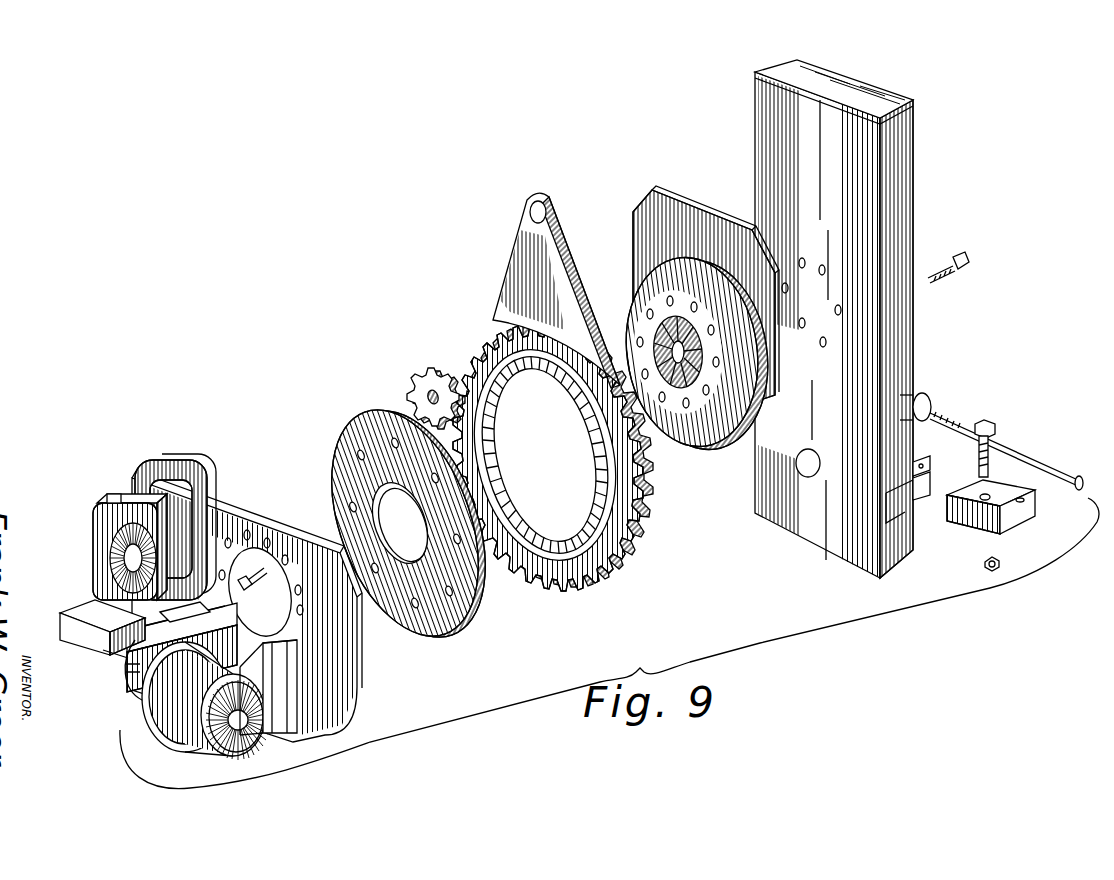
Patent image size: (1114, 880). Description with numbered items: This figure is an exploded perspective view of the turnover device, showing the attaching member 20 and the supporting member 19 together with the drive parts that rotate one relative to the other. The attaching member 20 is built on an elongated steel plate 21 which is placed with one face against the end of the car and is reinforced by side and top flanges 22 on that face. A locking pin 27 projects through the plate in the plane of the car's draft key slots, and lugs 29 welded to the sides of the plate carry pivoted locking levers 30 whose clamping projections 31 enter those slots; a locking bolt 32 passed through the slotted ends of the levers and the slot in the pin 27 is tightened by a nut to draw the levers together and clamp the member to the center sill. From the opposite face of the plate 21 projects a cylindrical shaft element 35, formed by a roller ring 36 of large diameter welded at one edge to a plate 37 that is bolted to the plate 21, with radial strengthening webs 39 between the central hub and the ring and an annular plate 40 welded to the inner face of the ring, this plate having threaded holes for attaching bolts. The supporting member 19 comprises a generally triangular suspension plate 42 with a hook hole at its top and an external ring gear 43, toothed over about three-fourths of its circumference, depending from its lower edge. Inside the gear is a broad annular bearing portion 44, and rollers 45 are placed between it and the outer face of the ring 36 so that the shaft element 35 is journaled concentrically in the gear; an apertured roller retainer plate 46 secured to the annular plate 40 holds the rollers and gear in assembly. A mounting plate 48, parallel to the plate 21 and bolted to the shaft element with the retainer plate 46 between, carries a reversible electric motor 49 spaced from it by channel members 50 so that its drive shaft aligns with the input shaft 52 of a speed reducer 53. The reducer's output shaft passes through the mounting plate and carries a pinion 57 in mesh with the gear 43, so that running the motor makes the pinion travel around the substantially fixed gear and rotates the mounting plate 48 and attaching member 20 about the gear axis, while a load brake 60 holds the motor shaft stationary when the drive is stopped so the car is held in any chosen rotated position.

The supporting member 19 is at (545, 290).
The attaching member 20 is at (834, 319).
The elongated steel plate 21 is at (815, 530).
The side and top flanges 22 is at (912, 118).
The locking pin 27 is at (930, 392).
The lugs 29 is at (912, 505).
The locking levers 30 is at (1010, 518).
The clamping projections 31 is at (970, 494).
The locking bolt 32 is at (1025, 455).
The shaft element 35 is at (686, 283).
The roller ring 36 is at (743, 427).
The plate 37 is at (672, 212).
The strengthening webs 39 is at (662, 328).
The annular plate 40 is at (688, 361).
The suspension plate 42 is at (533, 242).
The external ring gear 43 is at (553, 470).
The bearing portion 44 is at (545, 464).
The rollers 45 is at (510, 432).
The roller retainer plate 46 is at (438, 633).
The mounting plate 48 is at (205, 483).
The reversible electric motor 49 is at (225, 753).
The channel members 50 is at (291, 730).
The input shaft 52 is at (113, 645).
The speed reducer 53 is at (96, 532).
The pinion 57 is at (415, 384).
The load brake 60 is at (126, 688).